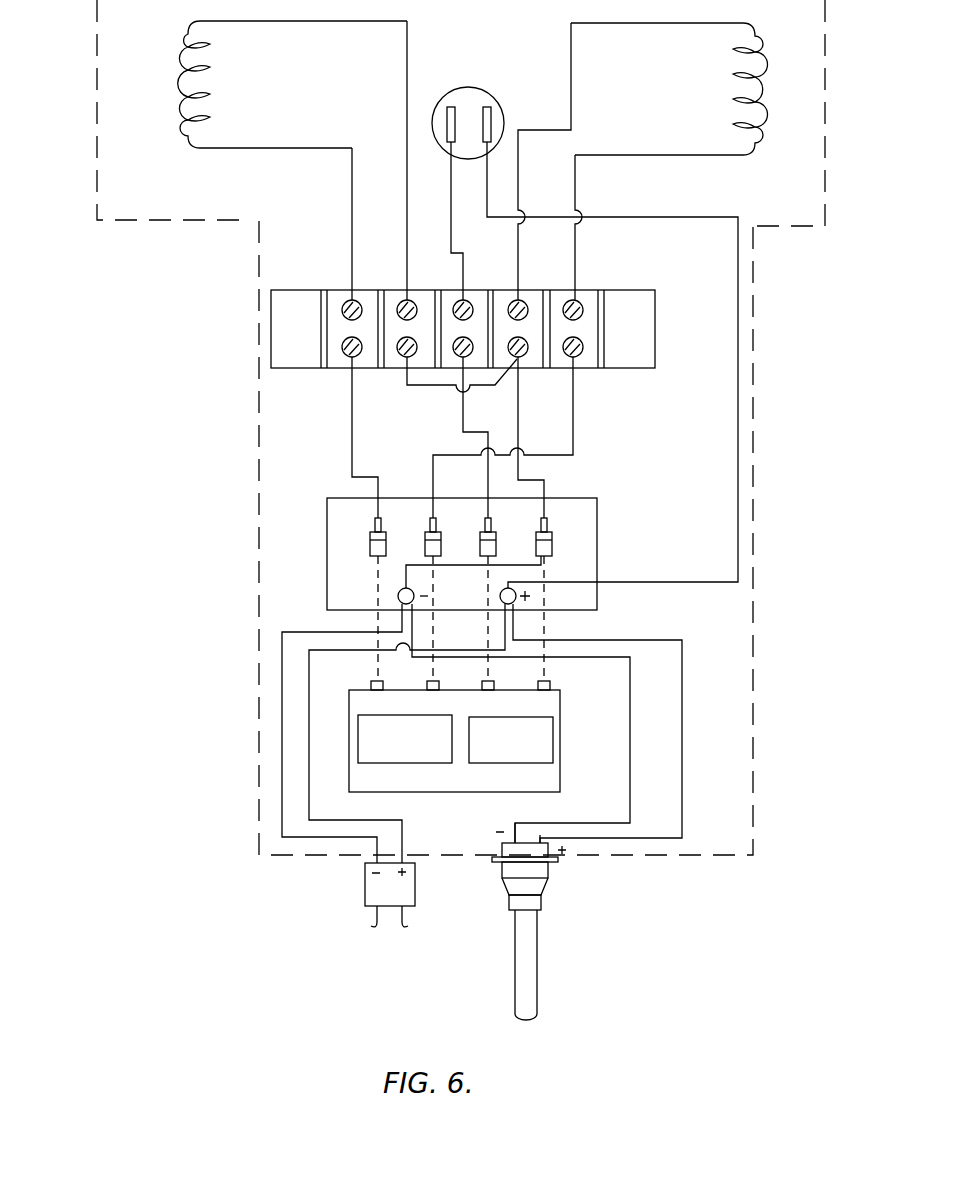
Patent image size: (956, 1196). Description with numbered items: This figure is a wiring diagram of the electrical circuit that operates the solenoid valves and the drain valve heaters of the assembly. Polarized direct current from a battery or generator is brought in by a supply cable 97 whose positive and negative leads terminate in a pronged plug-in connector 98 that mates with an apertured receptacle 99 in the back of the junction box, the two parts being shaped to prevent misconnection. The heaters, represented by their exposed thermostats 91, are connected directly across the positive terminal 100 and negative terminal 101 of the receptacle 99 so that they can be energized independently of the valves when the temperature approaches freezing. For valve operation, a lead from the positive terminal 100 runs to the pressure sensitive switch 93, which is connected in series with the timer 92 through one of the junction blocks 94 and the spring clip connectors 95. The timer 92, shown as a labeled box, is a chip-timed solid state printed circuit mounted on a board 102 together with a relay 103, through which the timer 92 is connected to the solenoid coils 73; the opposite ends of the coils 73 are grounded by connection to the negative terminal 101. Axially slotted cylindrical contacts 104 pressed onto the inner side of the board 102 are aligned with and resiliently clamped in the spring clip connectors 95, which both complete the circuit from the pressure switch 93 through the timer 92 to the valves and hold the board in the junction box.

The solenoid coils 73 is at (205, 72).
The pressure sensitive switch 93 is at (500, 110).
The junction blocks 94 is at (590, 372).
The spring clip connectors 95 is at (424, 540).
The negative terminal 101 is at (413, 591).
The positive terminal 100 is at (515, 604).
The board 102 is at (477, 737).
The cylindrical contacts 104 is at (428, 682).
The relay 103 is at (386, 763).
The timer 92 is at (540, 763).
The thermostats 91 is at (369, 880).
The receptacle 99 is at (532, 843).
The plug-in connector 98 is at (548, 868).
The supply cable 97 is at (537, 976).